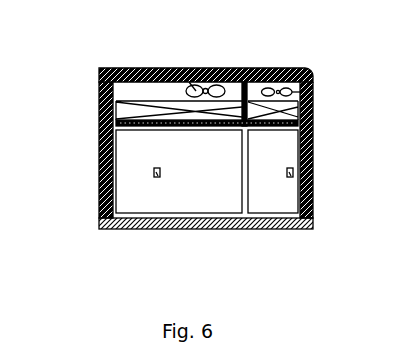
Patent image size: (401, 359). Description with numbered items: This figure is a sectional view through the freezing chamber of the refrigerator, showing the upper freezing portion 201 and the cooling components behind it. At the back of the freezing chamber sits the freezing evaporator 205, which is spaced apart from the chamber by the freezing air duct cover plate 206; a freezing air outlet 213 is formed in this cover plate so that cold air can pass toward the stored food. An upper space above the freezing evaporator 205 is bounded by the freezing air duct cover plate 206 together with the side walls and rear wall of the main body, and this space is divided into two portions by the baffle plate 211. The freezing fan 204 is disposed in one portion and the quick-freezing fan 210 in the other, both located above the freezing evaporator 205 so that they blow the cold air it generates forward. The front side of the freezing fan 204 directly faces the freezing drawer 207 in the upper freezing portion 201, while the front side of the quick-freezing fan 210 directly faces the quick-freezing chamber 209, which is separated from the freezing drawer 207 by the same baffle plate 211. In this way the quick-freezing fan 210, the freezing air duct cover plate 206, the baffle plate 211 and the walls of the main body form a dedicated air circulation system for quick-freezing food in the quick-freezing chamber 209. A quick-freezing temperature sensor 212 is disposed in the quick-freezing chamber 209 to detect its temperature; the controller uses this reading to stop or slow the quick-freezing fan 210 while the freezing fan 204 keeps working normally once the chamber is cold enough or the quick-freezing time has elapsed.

The upper freezing portion 201 is at (286, 229).
The freezing fan 204 is at (170, 58).
The freezing evaporator 205 is at (213, 109).
The freezing air duct cover plate 206 is at (287, 121).
The freezing drawer 207 is at (130, 170).
The quick-freezing chamber 209 is at (272, 183).
The quick-freezing fan 210 is at (312, 88).
The baffle plate 211 is at (248, 68).
The quick-freezing temperature sensor 212 is at (288, 177).
The freezing air outlet 213 is at (156, 177).